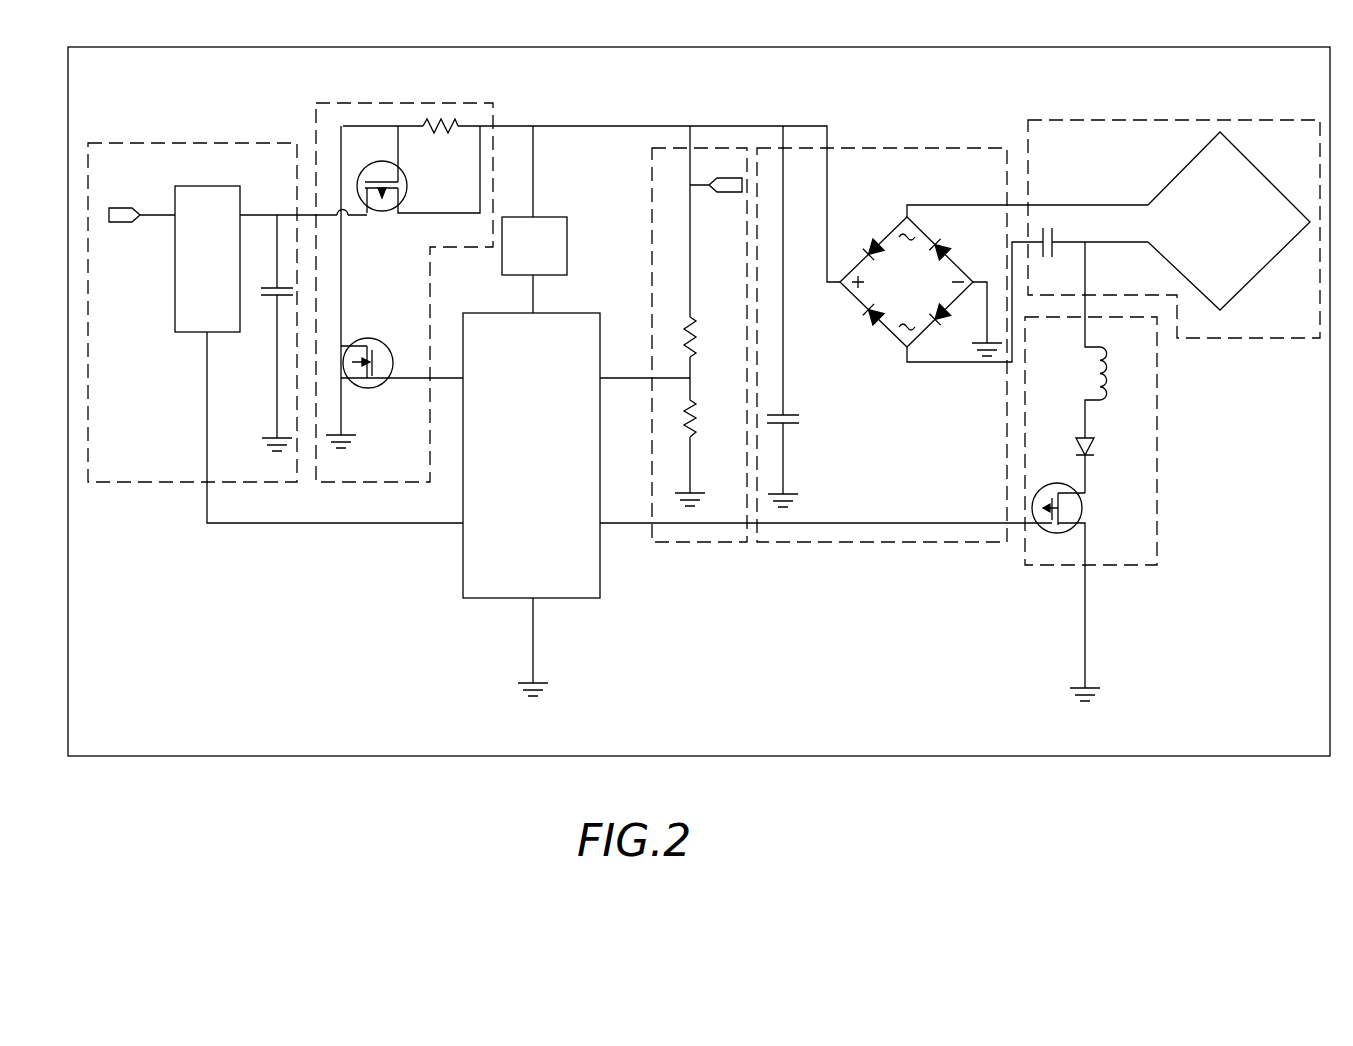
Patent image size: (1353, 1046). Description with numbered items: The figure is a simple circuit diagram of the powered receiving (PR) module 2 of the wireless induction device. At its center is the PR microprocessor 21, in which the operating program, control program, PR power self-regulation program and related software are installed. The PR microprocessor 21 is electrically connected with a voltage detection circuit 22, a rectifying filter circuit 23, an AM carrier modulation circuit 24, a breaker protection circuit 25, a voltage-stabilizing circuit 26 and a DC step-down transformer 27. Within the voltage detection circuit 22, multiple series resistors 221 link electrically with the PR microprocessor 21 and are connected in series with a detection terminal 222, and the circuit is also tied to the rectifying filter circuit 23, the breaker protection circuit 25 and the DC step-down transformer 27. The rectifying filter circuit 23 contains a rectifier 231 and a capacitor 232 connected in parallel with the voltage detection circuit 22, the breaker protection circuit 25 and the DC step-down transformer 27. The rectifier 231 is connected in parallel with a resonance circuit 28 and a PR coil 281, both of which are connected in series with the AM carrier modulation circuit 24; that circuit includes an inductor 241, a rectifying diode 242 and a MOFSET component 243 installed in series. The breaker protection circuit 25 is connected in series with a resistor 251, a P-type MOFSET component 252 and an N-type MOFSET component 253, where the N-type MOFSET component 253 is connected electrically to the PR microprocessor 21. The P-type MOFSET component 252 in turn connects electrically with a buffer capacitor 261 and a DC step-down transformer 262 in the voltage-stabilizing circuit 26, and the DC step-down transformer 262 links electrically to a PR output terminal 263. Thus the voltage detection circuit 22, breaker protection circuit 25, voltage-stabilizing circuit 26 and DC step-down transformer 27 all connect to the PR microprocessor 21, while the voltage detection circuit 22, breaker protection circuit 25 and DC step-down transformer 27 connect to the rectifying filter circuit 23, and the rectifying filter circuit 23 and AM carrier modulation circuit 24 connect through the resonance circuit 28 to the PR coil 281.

The powered receiving (PR) module 2 is at (1175, 738).
The PR microprocessor 21 is at (587, 573).
The voltage detection circuit 22 is at (672, 155).
The series resistors 221 is at (716, 443).
The detection terminal 222 is at (724, 190).
The rectifying filter circuit 23 is at (907, 160).
The rectifier 231 is at (860, 300).
The capacitor 232 is at (790, 427).
The AM carrier modulation circuit 24 is at (1150, 557).
The inductor 241 is at (1110, 375).
The rectifying diode 242 is at (1093, 443).
The MOFSET component 243 is at (1082, 508).
The breaker protection circuit 25 is at (361, 113).
The resistor 251 is at (441, 113).
The P-type MOFSET component 252 is at (407, 184).
The N-type MOFSET component 253 is at (362, 338).
The voltage-stabilizing circuit 26 is at (95, 358).
The buffer capacitor 261 is at (278, 300).
The DC step-down transformer 262 is at (185, 279).
The PR output terminal 263 is at (121, 208).
The DC step-down transformer 27 is at (553, 243).
The resonance circuit 28 is at (1063, 128).
The PR coil 281 is at (1240, 275).